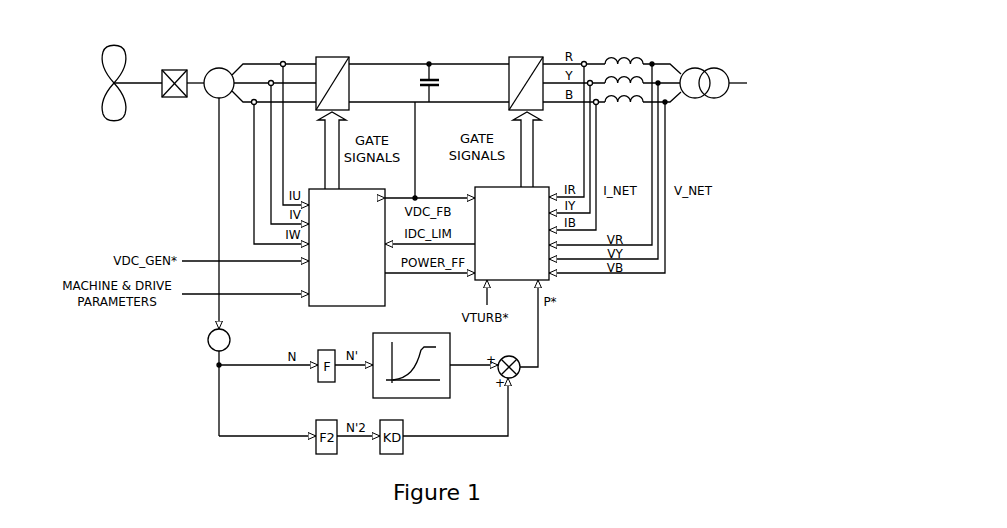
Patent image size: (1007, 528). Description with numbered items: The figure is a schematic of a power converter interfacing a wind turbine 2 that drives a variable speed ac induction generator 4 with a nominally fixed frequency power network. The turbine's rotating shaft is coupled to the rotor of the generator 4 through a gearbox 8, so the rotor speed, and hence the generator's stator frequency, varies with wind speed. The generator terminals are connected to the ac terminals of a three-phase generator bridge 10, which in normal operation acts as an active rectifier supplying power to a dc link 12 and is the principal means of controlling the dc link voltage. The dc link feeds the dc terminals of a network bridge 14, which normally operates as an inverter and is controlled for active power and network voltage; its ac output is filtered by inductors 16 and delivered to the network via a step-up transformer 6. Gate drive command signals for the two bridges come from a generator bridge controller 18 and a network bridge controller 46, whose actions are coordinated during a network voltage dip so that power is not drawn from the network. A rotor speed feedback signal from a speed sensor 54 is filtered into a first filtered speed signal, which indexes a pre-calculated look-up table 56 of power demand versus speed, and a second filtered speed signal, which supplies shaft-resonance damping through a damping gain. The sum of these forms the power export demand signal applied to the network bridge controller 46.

The wind turbine 2 is at (110, 122).
The variable speed ac induction generator 4 is at (216, 66).
The step-up transformer 6 is at (717, 65).
The gearbox 8 is at (171, 99).
The generator bridge 10 is at (352, 60).
The dc link 12 is at (432, 60).
The network bridge 14 is at (547, 60).
The inductors 16 is at (625, 49).
The generator bridge controller 18 is at (385, 306).
The network bridge controller 46 is at (557, 282).
The speed sensor 54 is at (213, 353).
The look-up table 56 is at (453, 380).